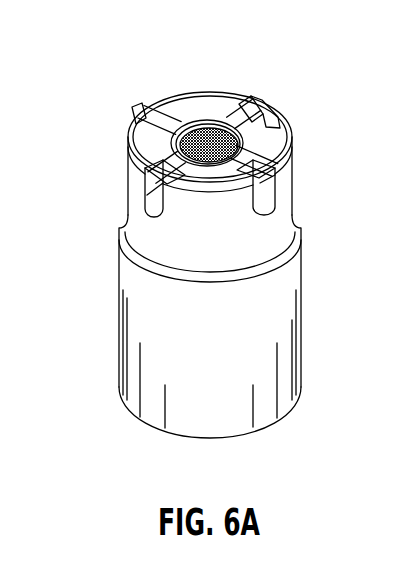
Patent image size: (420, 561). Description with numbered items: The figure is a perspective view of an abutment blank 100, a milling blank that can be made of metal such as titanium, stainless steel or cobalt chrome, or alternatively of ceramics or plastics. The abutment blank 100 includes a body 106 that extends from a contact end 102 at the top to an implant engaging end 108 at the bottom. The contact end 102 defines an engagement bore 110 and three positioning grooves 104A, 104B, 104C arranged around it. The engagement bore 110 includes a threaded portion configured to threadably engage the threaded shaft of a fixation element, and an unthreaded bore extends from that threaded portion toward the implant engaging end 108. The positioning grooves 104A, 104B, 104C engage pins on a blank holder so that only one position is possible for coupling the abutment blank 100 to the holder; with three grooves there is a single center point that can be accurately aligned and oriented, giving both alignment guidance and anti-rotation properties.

The abutment blank 100 is at (153, 56).
The contact end 102 is at (178, 102).
The positioning groove 104A is at (250, 113).
The positioning groove 104B is at (280, 188).
The positioning groove 104C is at (155, 183).
The body 106 is at (118, 313).
The implant engaging end 108 is at (270, 417).
The engagement bore 110 is at (175, 124).